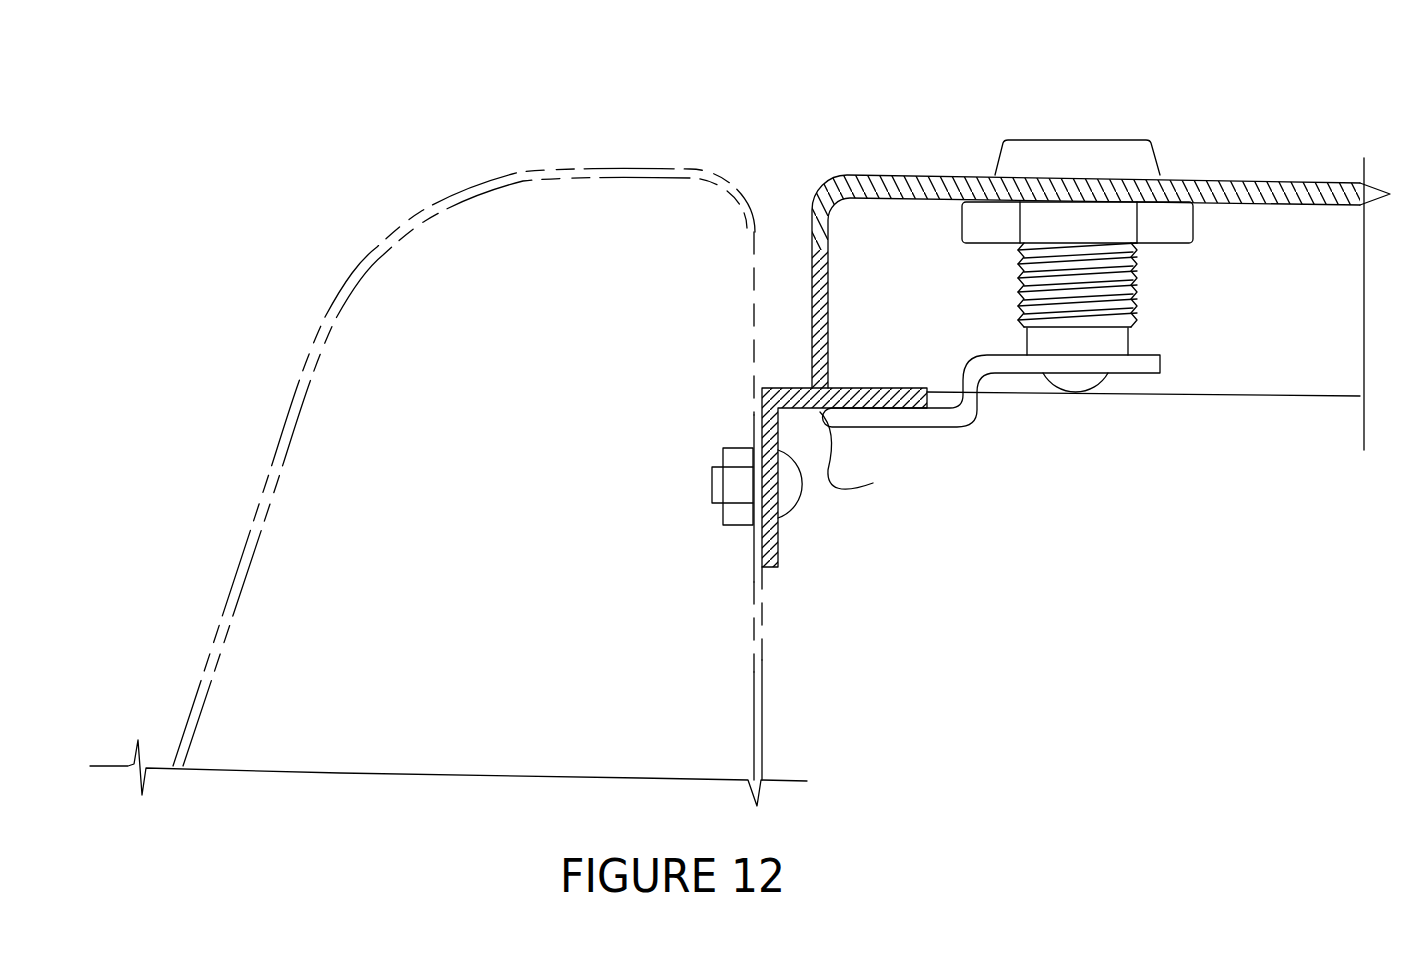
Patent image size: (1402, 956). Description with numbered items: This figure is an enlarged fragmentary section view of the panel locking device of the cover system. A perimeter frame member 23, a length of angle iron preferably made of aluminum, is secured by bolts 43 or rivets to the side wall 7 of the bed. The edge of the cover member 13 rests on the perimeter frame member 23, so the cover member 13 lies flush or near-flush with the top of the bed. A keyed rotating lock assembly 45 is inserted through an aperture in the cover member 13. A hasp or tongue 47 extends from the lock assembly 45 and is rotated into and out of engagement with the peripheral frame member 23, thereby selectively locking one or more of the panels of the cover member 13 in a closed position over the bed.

The side wall 7 is at (680, 208).
The cover member 13 is at (1245, 183).
The perimeter frame member 23 is at (1145, 338).
The bolt 43 is at (787, 506).
The keyed rotating lock assembly 45 is at (1070, 168).
The hasp or tongue 47 is at (978, 402).